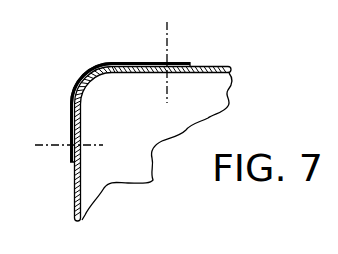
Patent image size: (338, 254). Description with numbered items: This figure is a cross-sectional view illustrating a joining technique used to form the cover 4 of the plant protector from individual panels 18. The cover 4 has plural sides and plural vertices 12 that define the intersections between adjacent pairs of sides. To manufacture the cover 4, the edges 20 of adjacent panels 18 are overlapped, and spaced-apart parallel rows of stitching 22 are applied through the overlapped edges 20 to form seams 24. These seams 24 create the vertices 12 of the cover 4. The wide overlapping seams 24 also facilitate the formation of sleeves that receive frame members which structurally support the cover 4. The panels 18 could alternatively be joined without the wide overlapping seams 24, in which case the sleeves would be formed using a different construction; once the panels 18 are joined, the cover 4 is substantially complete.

The cover 4 is at (62, 99).
The vertex 12 is at (83, 77).
The panel 18 is at (229, 63).
The edge 20 is at (191, 63).
The stitching 22 is at (169, 50).
The seam 24 is at (112, 61).